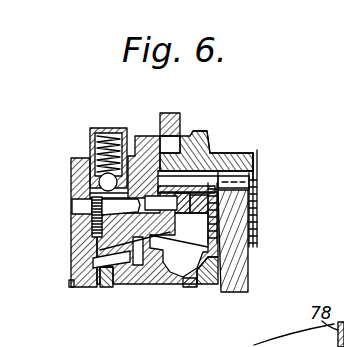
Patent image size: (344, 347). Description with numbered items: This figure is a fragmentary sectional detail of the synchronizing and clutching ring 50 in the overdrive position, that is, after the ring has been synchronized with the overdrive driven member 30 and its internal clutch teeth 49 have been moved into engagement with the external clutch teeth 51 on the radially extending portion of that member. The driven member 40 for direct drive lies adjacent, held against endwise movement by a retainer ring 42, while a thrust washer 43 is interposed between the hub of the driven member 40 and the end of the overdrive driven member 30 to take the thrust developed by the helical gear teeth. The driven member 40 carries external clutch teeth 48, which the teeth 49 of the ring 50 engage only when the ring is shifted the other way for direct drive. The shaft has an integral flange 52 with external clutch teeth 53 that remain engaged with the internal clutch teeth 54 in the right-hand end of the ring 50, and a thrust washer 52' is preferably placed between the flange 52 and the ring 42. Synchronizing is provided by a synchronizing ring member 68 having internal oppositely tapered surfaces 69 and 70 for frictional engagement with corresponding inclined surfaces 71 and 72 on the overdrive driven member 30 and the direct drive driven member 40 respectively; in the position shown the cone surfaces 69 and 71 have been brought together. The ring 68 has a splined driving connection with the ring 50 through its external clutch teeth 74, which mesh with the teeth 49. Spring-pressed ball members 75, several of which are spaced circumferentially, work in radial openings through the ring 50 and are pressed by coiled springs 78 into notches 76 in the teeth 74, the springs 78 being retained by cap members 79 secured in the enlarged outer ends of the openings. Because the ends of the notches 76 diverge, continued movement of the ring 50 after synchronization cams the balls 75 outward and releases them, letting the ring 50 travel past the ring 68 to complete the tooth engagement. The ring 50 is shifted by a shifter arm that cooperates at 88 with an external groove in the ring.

The overdrive driven member 30 is at (80, 289).
The driven member for direct drive 40 is at (157, 286).
The retainer ring 42 is at (188, 289).
The thrust washer 43 is at (106, 289).
The external clutch teeth 48 is at (208, 158).
The internal clutch teeth 49 is at (136, 150).
The synchronizing and clutching ring 50 is at (199, 158).
The external clutch teeth 51 is at (72, 209).
The integral flange 52 is at (256, 241).
The thrust washer 52' is at (205, 295).
The external clutch teeth 53 is at (254, 153).
The internal clutch teeth 54 is at (253, 181).
The synchronizing ring member 68 is at (121, 290).
The internal tapered surface 69 is at (92, 223).
The internal tapered surface 70 is at (255, 219).
The inclined surface 71 is at (105, 250).
The inclined surface 72 is at (255, 239).
The external clutch teeth 74 is at (203, 135).
The spring-pressed ball members 75 is at (98, 181).
The notches 76 is at (74, 206).
The coiled springs 78 is at (92, 138).
The cap members 79 is at (107, 128).
The shifting engagement 88 is at (184, 137).